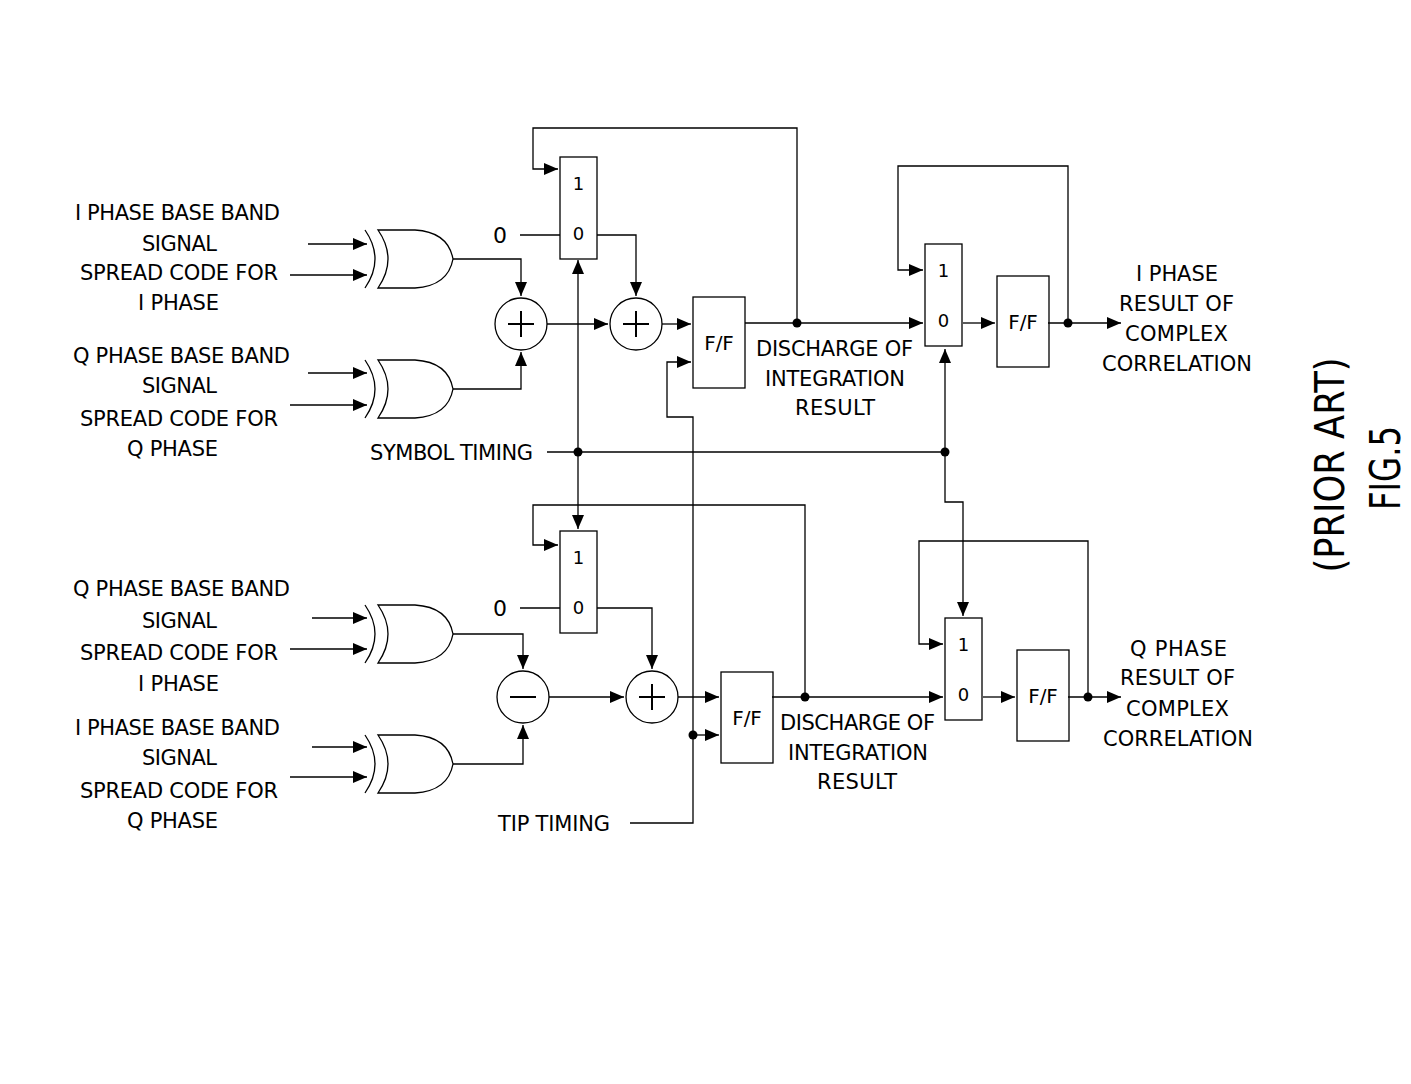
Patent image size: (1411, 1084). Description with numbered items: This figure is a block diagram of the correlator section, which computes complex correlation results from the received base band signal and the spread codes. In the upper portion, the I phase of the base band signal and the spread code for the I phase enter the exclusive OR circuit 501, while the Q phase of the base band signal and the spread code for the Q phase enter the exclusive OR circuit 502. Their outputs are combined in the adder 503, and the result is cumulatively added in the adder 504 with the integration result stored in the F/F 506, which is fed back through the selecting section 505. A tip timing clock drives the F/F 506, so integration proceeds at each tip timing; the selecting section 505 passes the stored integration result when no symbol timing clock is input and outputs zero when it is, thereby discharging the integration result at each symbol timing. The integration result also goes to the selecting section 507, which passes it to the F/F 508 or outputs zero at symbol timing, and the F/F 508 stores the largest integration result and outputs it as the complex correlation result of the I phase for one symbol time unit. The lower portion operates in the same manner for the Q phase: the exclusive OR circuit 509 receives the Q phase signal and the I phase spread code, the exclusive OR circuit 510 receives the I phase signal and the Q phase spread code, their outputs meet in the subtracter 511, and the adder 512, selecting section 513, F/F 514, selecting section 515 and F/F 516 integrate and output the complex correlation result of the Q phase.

The exclusive OR circuit 501 is at (392, 228).
The exclusive OR circuit 502 is at (392, 358).
The adder 503 is at (494, 323).
The adder 504 is at (642, 297).
The selecting section 505 is at (598, 206).
The F/F 506 is at (725, 297).
The selecting section 507 is at (943, 241).
The F/F 508 is at (1020, 368).
The exclusive OR circuit 509 is at (392, 600).
The exclusive OR circuit 510 is at (392, 730).
The subtracter 511 is at (494, 694).
The adder 512 is at (630, 718).
The selecting section 513 is at (598, 580).
The F/F 514 is at (740, 672).
The selecting section 515 is at (985, 618).
The F/F 516 is at (1040, 740).